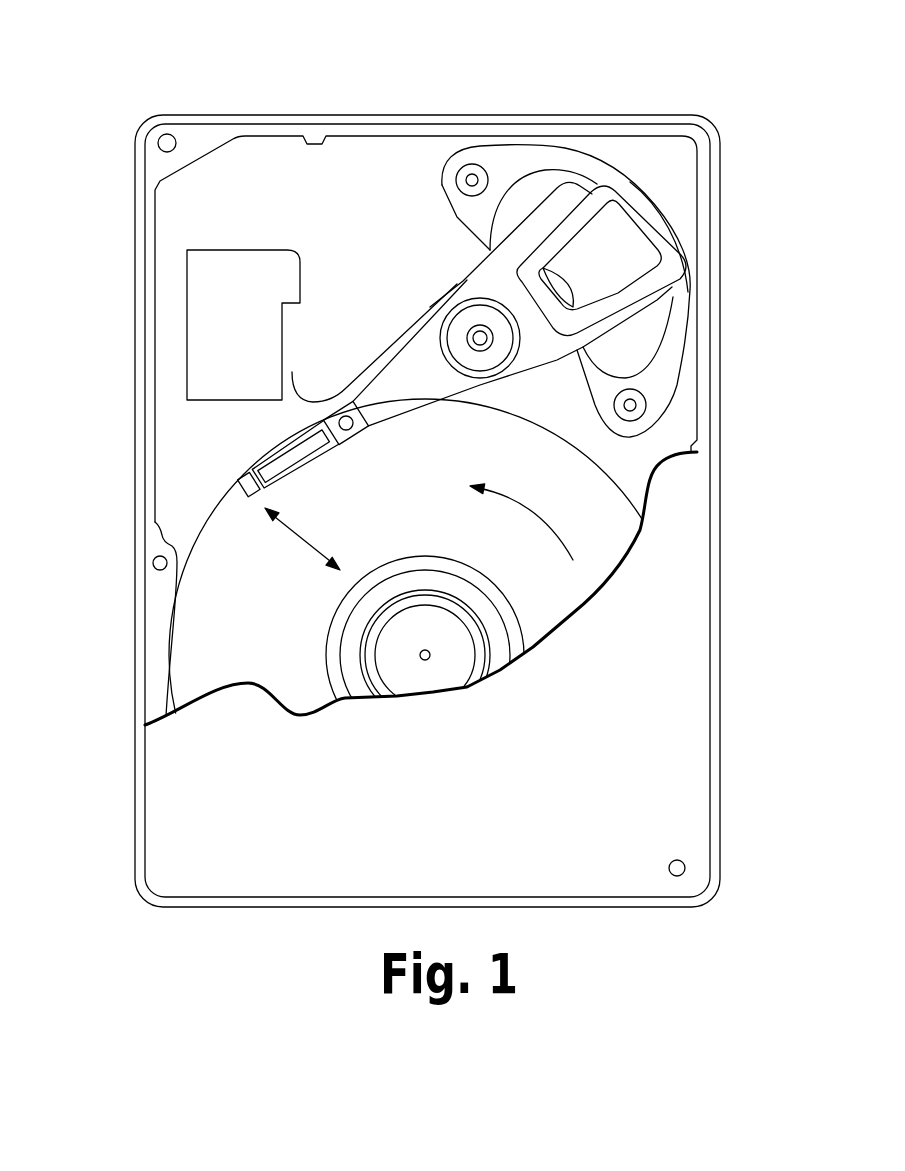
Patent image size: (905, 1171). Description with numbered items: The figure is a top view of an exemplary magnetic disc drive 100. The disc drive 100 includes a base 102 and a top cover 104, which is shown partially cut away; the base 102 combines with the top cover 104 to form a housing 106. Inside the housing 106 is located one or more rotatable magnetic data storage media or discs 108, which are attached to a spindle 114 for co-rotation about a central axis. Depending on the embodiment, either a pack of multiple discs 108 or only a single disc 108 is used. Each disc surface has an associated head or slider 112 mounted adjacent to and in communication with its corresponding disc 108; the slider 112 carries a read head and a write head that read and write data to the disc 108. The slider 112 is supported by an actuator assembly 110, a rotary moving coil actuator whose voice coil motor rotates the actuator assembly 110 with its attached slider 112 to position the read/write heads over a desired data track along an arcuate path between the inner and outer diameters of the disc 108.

The magnetic disc drive 100 is at (200, 48).
The base 102 is at (396, 236).
The top cover 104 is at (451, 756).
The housing 106 is at (720, 413).
The magnetic data storage disc 108 is at (414, 522).
The actuator assembly 110 is at (405, 377).
The slider 112 is at (236, 481).
The spindle 114 is at (420, 656).